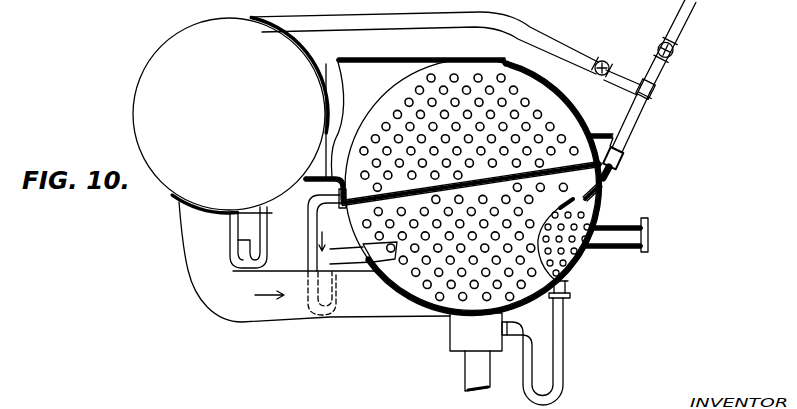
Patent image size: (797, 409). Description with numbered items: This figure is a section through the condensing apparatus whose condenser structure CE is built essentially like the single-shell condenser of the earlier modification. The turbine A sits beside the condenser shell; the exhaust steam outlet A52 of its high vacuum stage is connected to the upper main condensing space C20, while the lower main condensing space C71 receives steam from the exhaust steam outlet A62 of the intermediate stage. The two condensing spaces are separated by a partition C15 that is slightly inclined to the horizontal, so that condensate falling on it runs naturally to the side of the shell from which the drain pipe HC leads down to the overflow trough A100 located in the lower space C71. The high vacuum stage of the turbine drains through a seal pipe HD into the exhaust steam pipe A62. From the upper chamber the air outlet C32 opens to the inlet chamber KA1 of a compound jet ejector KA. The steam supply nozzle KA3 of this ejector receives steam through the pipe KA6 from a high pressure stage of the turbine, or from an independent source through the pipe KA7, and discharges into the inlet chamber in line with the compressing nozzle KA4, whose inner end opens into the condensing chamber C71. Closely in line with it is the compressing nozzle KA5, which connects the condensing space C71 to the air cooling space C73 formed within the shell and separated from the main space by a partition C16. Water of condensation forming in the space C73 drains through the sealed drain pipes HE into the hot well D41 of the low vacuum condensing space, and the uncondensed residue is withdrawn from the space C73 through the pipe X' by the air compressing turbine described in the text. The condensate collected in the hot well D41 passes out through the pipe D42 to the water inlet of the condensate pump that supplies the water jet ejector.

The turbine A is at (230, 115).
The exhaust steam outlet A52 is at (329, 66).
The exhaust steam outlet A62 is at (187, 240).
The overflow trough A100 is at (373, 266).
The partition C15 is at (362, 170).
The upper main condensing space C20 is at (472, 62).
The air outlet C32 is at (600, 132).
The low vacuum condensing space C71 is at (424, 296).
The air cooling space C73 is at (568, 232).
The partition C16 is at (580, 260).
The condenser structure CE is at (517, 60).
The compound jet ejector KA is at (612, 175).
The inlet chamber KA1 is at (566, 98).
The steam supply nozzle KA3 is at (625, 158).
The compressing nozzle KA4 is at (600, 196).
The compressing nozzle KA5 is at (645, 221).
The steam pipe KA6 is at (568, 40).
The steam pipe KA7 is at (663, 75).
The pipe X' is at (657, 241).
The seal pipe HD is at (268, 215).
The drain pipe HC is at (308, 246).
The sealed drain pipes HE is at (565, 337).
The hot well D41 is at (478, 332).
The condensate pipe D42 is at (465, 371).